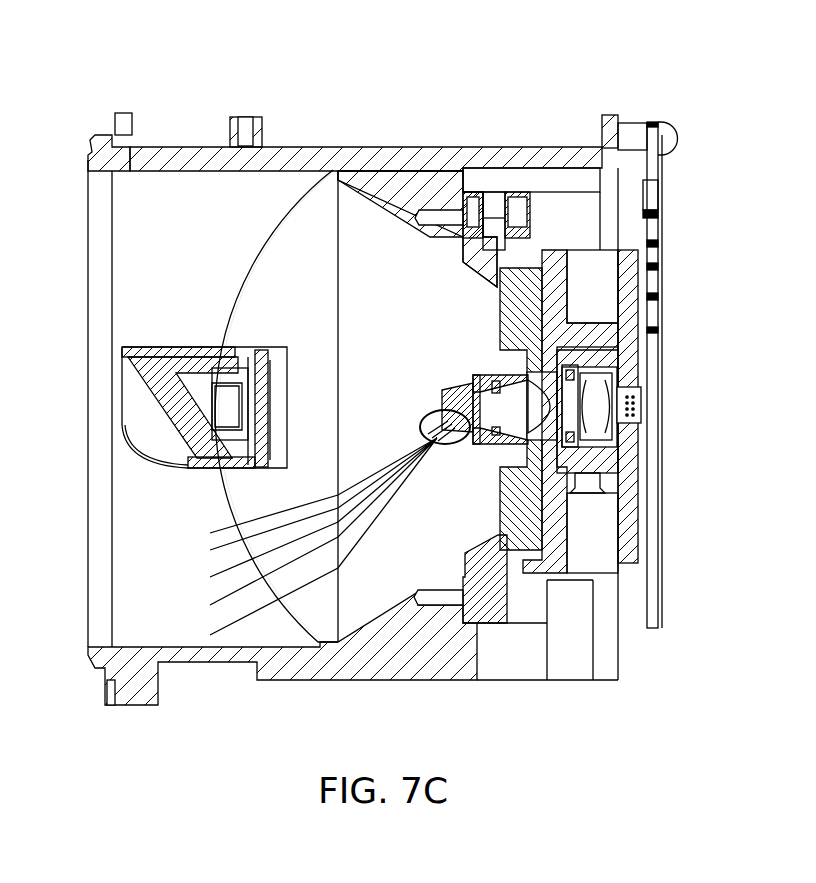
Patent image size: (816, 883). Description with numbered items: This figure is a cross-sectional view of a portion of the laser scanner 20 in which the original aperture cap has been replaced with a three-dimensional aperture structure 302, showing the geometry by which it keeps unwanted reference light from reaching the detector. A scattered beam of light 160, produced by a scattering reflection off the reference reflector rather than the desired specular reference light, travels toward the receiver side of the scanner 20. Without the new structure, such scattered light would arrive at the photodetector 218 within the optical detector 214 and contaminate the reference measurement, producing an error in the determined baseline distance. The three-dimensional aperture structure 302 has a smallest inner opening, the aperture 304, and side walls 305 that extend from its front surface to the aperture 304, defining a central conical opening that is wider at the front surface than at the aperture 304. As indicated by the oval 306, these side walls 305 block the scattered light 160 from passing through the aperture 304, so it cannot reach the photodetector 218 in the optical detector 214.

The laser scanner 20 is at (184, 62).
The scattered beam of light 160 is at (413, 483).
The optical detector 214 is at (679, 439).
The photodetector 218 is at (641, 400).
The 3D aperture structure 302 is at (466, 406).
The aperture 304 is at (461, 405).
The side walls 305 is at (461, 440).
The oval 306 is at (430, 415).